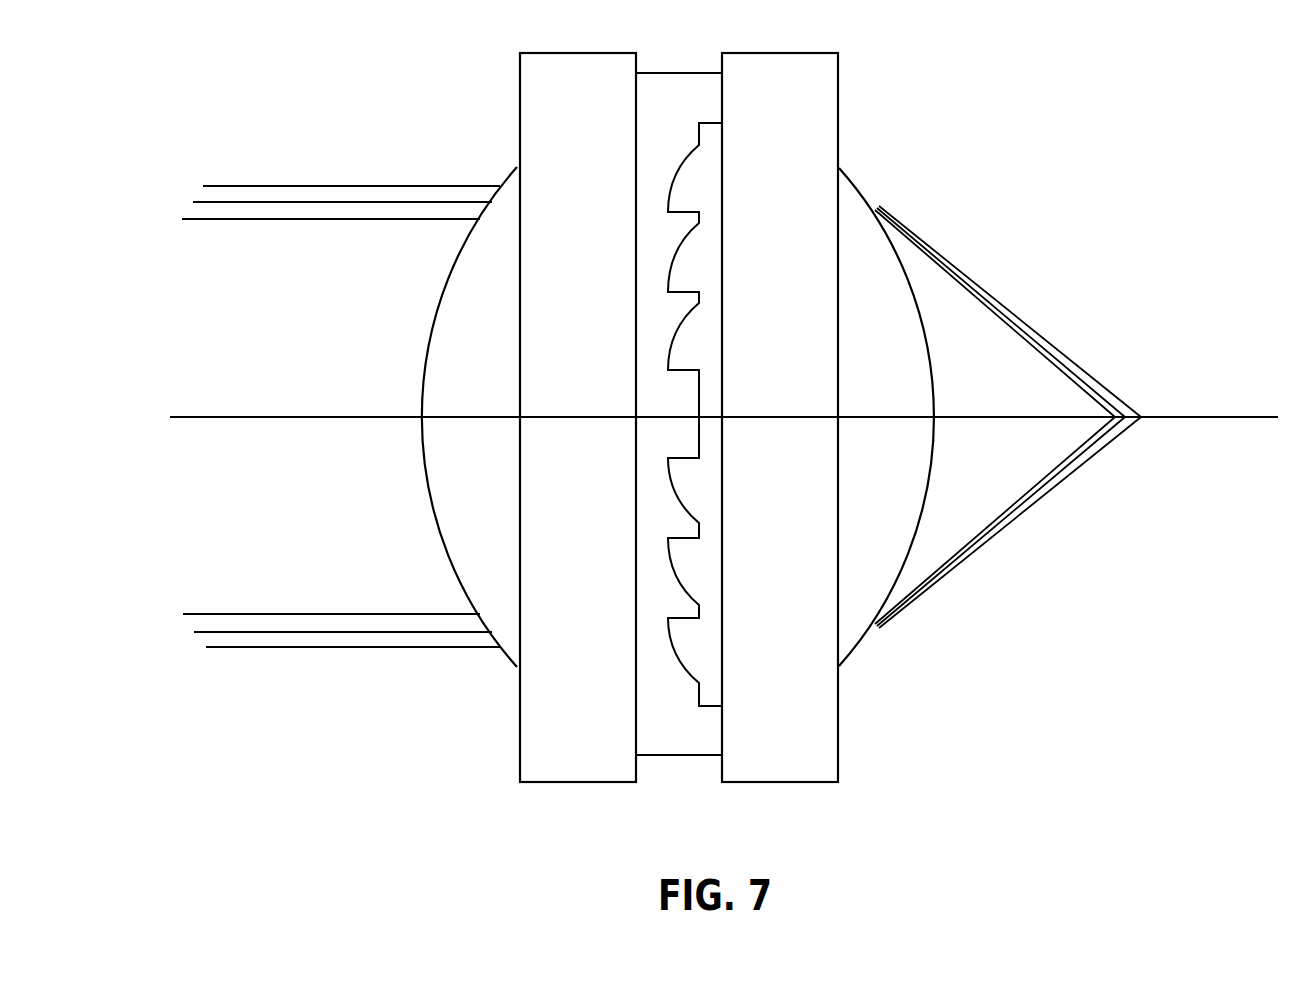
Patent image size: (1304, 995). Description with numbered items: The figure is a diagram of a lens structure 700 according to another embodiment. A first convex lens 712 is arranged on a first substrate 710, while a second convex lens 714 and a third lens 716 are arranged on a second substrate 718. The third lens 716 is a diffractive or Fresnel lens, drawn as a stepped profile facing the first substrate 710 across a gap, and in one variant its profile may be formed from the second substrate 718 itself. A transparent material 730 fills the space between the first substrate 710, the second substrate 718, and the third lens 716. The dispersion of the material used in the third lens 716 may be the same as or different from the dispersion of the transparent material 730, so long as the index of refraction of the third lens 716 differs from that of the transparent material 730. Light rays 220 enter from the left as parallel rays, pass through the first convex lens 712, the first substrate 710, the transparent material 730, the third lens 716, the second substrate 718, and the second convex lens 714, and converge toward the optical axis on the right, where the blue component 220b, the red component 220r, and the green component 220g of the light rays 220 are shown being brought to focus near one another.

The lens structure 700 is at (1062, 117).
The first substrate 710 is at (611, 348).
The first convex lens 712 is at (505, 348).
The second convex lens 714 is at (907, 348).
The third lens 716 is at (698, 186).
The second substrate 718 is at (815, 348).
The transparent material 730 is at (702, 117).
The light rays 220 is at (258, 185).
The blue component 220b is at (1000, 302).
The red component 220r is at (1060, 347).
The green component 220g is at (1123, 395).